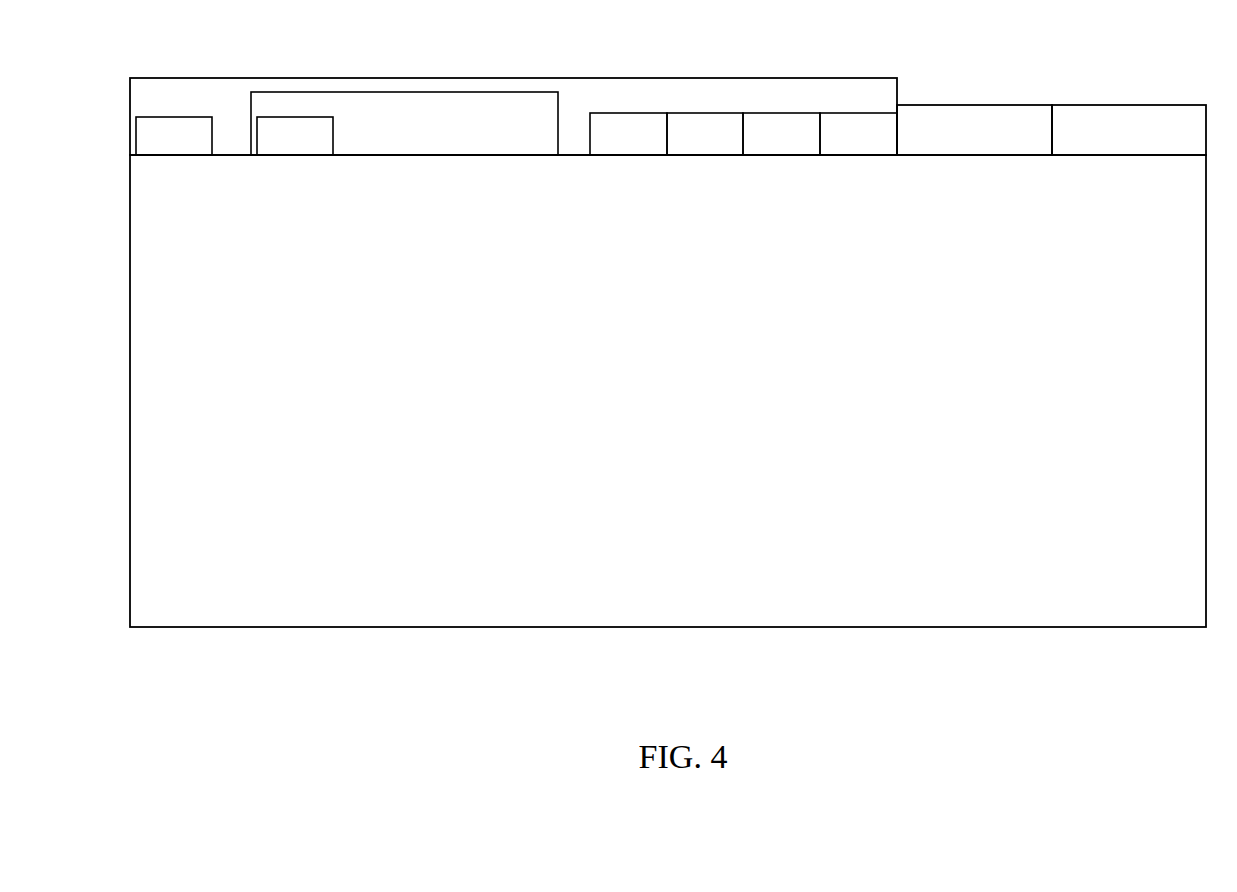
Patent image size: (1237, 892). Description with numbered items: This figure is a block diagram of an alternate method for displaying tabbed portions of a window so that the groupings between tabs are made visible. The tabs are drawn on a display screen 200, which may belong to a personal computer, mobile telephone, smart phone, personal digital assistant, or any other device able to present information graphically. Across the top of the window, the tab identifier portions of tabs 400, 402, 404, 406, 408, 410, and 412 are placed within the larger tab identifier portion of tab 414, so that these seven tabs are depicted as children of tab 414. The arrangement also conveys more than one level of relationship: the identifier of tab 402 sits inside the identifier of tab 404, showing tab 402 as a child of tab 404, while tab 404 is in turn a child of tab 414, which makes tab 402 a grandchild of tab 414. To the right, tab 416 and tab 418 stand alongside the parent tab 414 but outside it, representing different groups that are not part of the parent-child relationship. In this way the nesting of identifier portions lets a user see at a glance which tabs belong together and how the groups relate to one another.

The display screen 200 is at (1071, 628).
The tab 400 is at (212, 137).
The tab 402 is at (333, 137).
The tab 404 is at (558, 137).
The tab 406 is at (628, 113).
The tab 408 is at (705, 113).
The tab 410 is at (782, 113).
The tab 412 is at (858, 113).
The tab 414 is at (182, 78).
The tab 416 is at (975, 105).
The tab 418 is at (1128, 105).